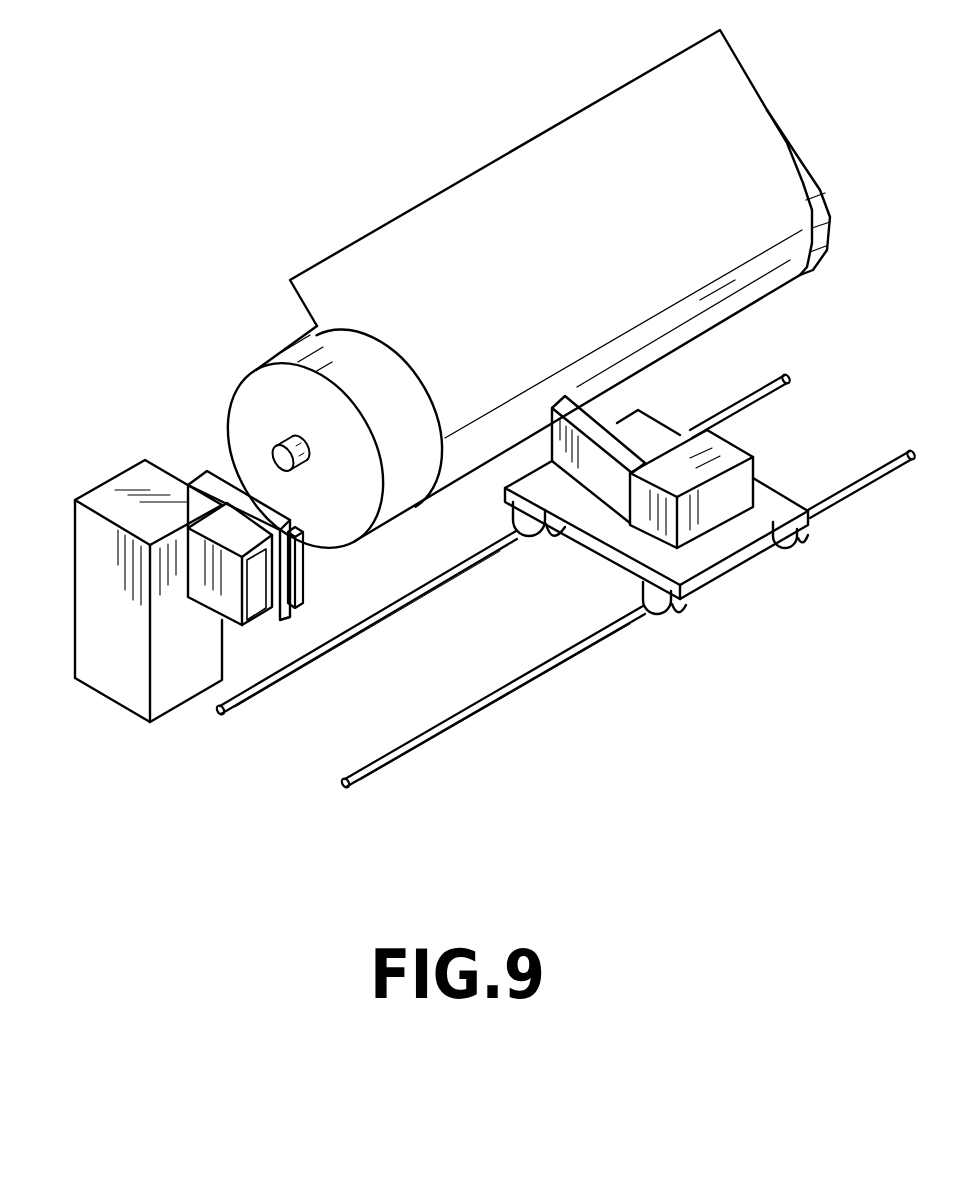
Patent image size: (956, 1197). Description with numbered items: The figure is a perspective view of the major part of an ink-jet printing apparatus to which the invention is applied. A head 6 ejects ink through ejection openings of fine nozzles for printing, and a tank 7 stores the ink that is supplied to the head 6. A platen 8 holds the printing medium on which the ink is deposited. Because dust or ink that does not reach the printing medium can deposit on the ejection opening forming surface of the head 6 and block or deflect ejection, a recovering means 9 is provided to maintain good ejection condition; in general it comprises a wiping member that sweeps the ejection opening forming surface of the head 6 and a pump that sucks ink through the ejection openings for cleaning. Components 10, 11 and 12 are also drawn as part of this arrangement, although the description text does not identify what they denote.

The head 6 is at (592, 482).
The tank 7 is at (748, 437).
The platen 8 is at (244, 390).
The recovering means 9 is at (197, 572).
The thin plate 10 is at (304, 573).
The sensor block 11 is at (217, 602).
The housing block 12 is at (88, 633).